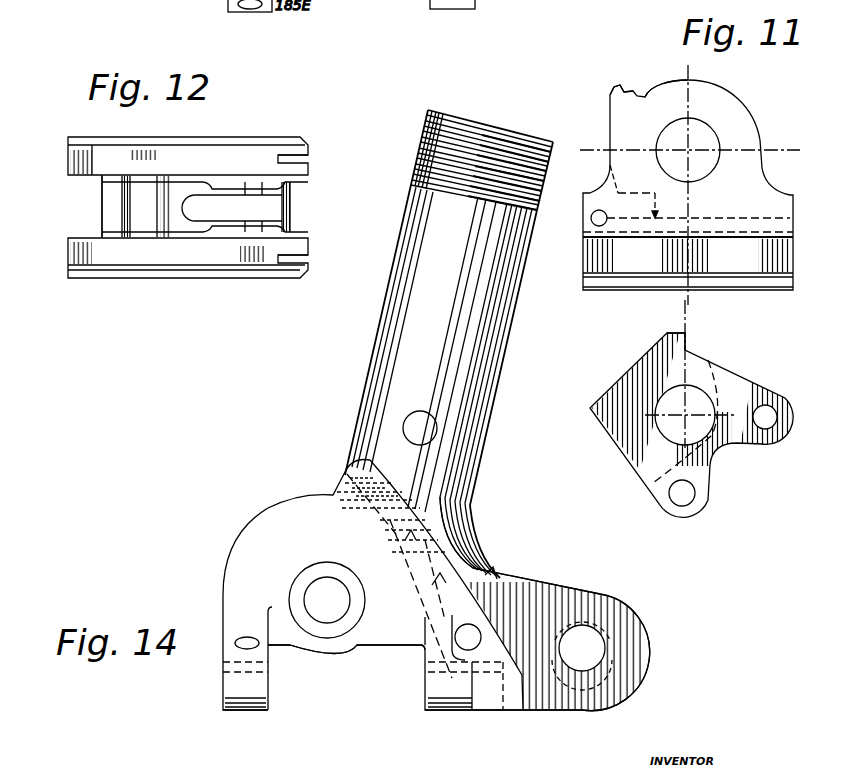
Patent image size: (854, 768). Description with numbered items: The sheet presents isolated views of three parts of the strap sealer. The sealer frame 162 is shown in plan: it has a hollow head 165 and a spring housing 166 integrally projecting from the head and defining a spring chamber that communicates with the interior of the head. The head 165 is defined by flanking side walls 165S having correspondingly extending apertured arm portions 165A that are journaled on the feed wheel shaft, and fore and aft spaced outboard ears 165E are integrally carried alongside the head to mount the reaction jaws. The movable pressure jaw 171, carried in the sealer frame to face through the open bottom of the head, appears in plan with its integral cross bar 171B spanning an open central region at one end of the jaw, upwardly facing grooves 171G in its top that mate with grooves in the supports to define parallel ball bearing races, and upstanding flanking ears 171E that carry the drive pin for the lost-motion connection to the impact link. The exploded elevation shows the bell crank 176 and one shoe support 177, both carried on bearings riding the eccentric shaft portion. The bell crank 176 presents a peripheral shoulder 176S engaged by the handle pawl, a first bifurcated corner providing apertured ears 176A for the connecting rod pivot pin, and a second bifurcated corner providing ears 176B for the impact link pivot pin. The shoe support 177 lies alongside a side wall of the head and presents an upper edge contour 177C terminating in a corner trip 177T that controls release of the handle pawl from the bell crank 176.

In FIG. 12, the movable pressure jaw 171 is at (192, 128).
In FIG. 12, the upwardly facing grooves 171G is at (225, 167).
In FIG. 12, the integral cross bar 171B is at (110, 195).
In FIG. 12, the upstanding flanking ears 171E is at (238, 232).
In FIG. 11, the shoe support 177 is at (668, 121).
In FIG. 11, the corner trip 177T is at (625, 90).
In FIG. 11, the upper edge contour 177C is at (675, 85).
In FIG. 11, the bell crank 176 is at (628, 419).
In FIG. 11, the peripheral shoulder 176S is at (690, 345).
In FIG. 11, the ears 176A is at (735, 385).
In FIG. 11, the ears 176B is at (660, 498).
In FIG. 14, the spring housing 166 is at (512, 330).
In FIG. 14, the sealer frame 162 is at (473, 502).
In FIG. 14, the hollow head 165 is at (240, 540).
In FIG. 14, the apertured arm portions 165A is at (550, 592).
In FIG. 14, the side walls 165S is at (395, 640).
In FIG. 14, the outboard ears 165E is at (232, 712).